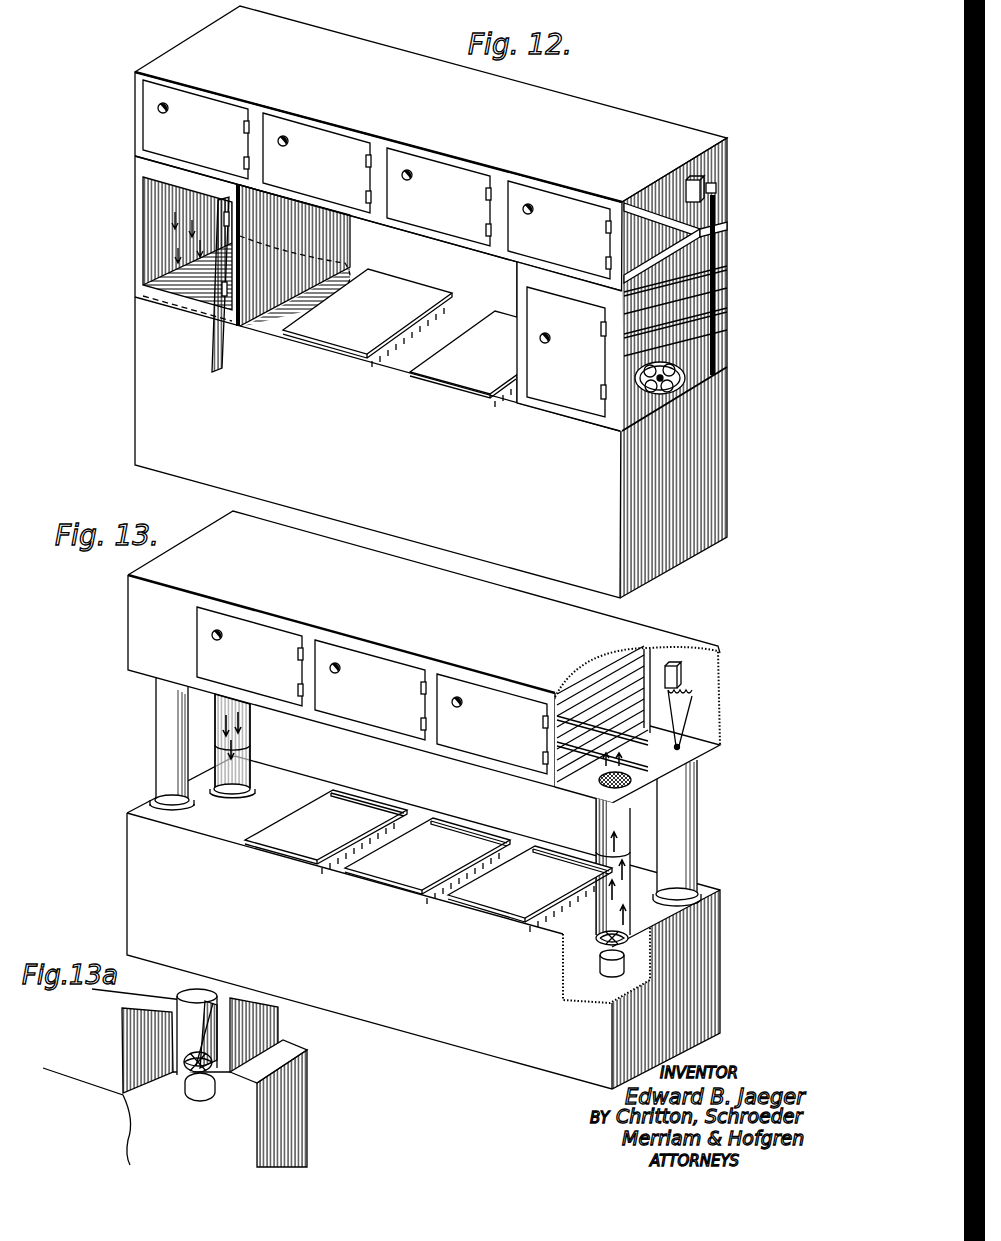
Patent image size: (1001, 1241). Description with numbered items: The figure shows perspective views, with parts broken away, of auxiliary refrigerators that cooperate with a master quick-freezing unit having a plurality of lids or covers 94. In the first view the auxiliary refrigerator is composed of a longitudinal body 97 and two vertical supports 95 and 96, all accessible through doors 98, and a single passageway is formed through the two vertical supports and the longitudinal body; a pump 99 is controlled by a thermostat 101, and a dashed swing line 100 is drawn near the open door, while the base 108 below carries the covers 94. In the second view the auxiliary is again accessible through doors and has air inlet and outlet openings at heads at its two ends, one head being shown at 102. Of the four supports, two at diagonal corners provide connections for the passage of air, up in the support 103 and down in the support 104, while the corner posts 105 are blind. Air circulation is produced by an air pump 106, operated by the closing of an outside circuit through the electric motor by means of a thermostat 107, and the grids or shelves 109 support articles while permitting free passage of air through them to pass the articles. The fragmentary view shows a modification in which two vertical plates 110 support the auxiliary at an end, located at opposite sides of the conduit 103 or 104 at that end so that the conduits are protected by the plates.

In FIG. 12, the lids or covers 94 is at (396, 321).
In FIG. 13, the lids or covers 94 is at (330, 826).
In FIG. 12, the vertical support 95 is at (143, 178).
In FIG. 12, the vertical support 96 is at (517, 270).
In FIG. 12, the longitudinal body 97 is at (452, 128).
In FIG. 12, the doors 98 is at (292, 145).
In FIG. 12, the pump 99 is at (686, 378).
In FIG. 12, the door stop 100 is at (313, 298).
In FIG. 12, the thermostat 101 is at (712, 184).
In FIG. 13, the head 102 is at (699, 683).
In FIG. 13, the support for upward air passage 103 is at (598, 826).
In FIG. 13A, the support for upward air passage 103 is at (192, 998).
In FIG. 13, the support for downward air passage 104 is at (250, 731).
In FIG. 13, the corner posts 105 is at (162, 718).
In FIG. 13, the air pump 106 is at (606, 961).
In FIG. 13, the thermostat 107 is at (679, 664).
In FIG. 13, the base 108 is at (458, 996).
In FIG. 13, the grids or shelves 109 is at (620, 700).
In FIG. 13A, the plates 110 is at (122, 1042).